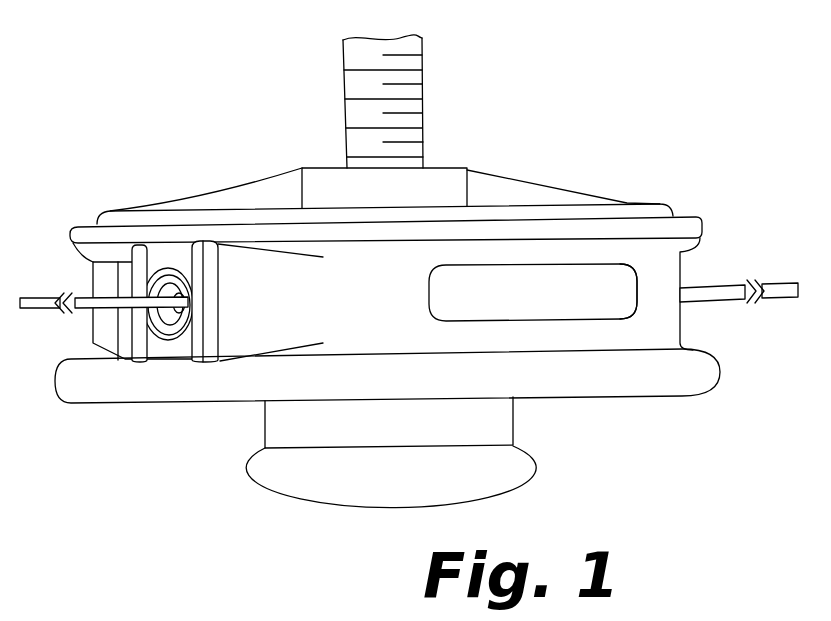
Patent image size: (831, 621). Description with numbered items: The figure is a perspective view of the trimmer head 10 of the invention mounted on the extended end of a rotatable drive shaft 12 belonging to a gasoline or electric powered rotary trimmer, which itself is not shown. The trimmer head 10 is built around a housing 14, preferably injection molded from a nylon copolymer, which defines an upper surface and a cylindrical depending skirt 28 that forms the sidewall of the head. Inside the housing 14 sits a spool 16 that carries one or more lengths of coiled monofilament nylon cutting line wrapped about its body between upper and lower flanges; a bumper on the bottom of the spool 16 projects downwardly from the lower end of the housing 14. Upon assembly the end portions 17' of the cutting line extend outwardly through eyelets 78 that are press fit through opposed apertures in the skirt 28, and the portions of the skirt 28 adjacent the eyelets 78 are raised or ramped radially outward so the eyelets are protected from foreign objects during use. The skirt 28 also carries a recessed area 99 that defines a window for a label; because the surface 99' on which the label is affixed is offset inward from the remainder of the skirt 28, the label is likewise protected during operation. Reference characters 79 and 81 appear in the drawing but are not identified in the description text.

The trimmer head 10 is at (563, 142).
The drive shaft 12 is at (413, 103).
The housing 14 is at (102, 407).
The spool 16 is at (265, 428).
The end portions of the cutting line 17' is at (408, 276).
The housing skirt 28 is at (307, 311).
The eyelets 78 is at (166, 272).
The guide posts 79 is at (208, 263).
The cup 81 is at (290, 485).
The recessed area 99 is at (598, 292).
The label surface 99' is at (533, 292).